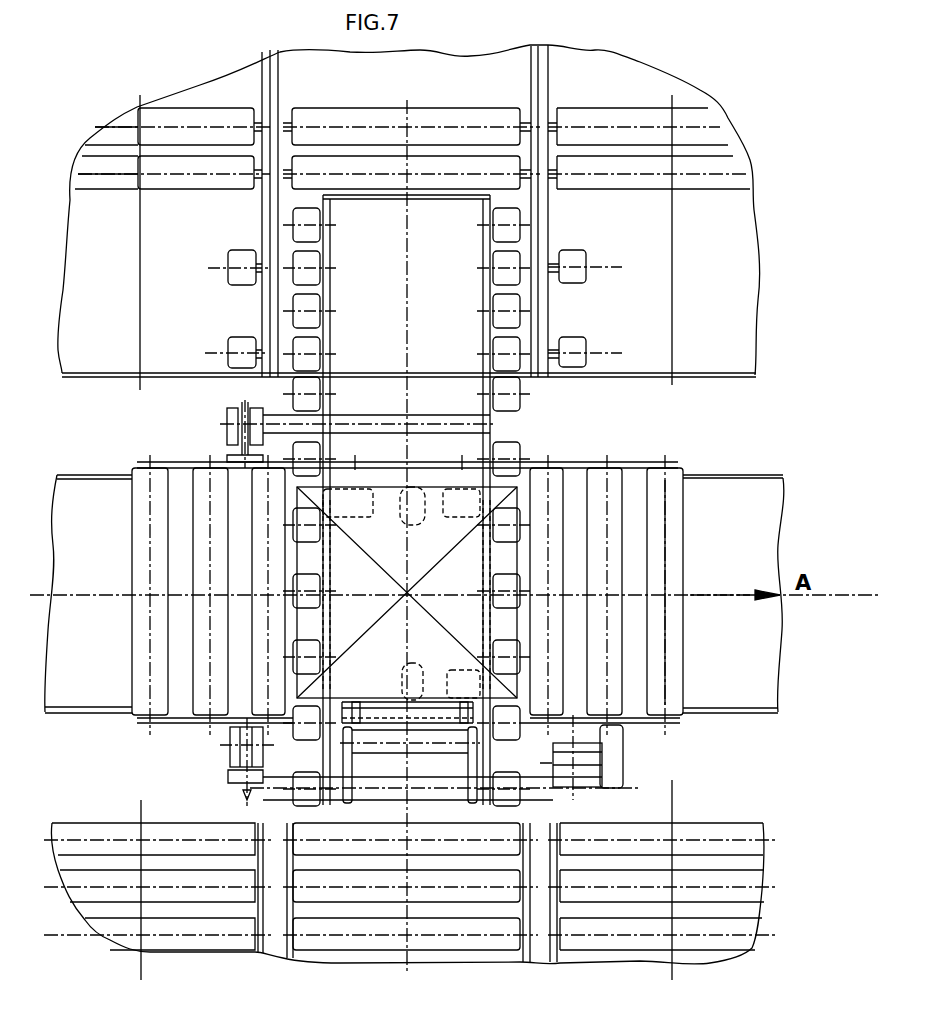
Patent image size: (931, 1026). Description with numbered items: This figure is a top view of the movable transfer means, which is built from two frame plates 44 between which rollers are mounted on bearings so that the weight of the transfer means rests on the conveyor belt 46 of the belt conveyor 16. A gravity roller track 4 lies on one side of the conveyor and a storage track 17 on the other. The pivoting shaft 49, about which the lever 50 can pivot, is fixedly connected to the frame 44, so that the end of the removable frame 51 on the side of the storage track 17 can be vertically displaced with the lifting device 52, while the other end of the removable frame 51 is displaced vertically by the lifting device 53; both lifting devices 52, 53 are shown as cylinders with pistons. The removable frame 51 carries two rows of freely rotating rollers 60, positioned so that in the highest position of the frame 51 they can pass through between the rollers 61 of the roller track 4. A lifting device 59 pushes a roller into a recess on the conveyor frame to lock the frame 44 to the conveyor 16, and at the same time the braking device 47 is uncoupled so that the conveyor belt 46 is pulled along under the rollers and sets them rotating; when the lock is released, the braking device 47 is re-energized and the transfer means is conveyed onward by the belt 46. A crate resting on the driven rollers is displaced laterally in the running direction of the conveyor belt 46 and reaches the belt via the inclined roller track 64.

The gravity roller track 4 is at (672, 150).
The belt conveyor 16 is at (787, 473).
The storage track 17 is at (708, 862).
The frame plates 44 is at (617, 462).
The conveyor belt 46 is at (740, 567).
The braking device 47 is at (410, 685).
The pivoting shaft 49 is at (425, 748).
The lever 50 is at (352, 770).
The removable frame 51 is at (492, 435).
The lifting device 52 is at (237, 747).
The lifting device 53 is at (226, 428).
The lifting device 59 is at (602, 762).
The freely rotating rollers 60 is at (490, 304).
The rollers of the roller track 61 is at (512, 262).
The inclined roller track 64 is at (660, 672).